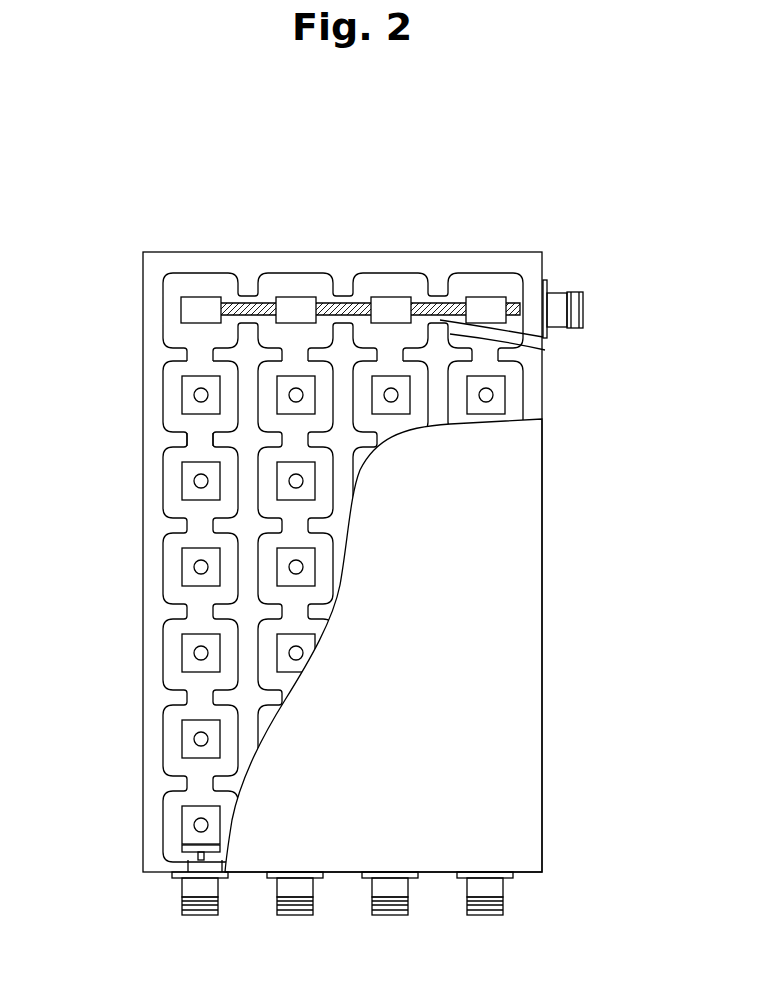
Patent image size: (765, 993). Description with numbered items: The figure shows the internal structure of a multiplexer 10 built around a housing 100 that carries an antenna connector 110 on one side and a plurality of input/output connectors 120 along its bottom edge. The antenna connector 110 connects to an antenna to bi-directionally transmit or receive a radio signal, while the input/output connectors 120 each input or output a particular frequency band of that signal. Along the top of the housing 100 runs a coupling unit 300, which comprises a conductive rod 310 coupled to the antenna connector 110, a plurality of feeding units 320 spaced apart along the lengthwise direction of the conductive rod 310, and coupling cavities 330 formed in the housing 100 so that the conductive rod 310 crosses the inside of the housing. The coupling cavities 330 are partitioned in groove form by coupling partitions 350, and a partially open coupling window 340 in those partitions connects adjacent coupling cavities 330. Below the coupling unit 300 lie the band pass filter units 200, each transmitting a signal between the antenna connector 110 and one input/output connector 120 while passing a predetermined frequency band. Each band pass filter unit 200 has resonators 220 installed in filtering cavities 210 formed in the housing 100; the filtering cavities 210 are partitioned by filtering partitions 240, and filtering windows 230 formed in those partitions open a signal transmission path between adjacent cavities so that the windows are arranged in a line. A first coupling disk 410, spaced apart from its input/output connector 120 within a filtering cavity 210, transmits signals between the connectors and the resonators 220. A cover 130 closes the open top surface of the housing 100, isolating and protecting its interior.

The battery module 10 is at (605, 115).
The housing 100 is at (143, 422).
The antenna connector 110 is at (585, 310).
The input/output connectors 120 is at (200, 915).
The cover 130 is at (522, 750).
The band pass filter unit 200 is at (313, 525).
The filtering cavities 210 is at (180, 567).
The resonators 220 is at (198, 580).
The filtering windows 230 is at (186, 522).
The filtering partitions 240 is at (197, 437).
The coupling unit 300 is at (363, 274).
The conductive rod 310 is at (255, 312).
The feeding units 320 is at (197, 305).
The coupling cavities 330 is at (317, 287).
The coupling window 340 is at (543, 337).
The coupling partitions 350 is at (545, 350).
The first coupling disk 410 is at (182, 848).